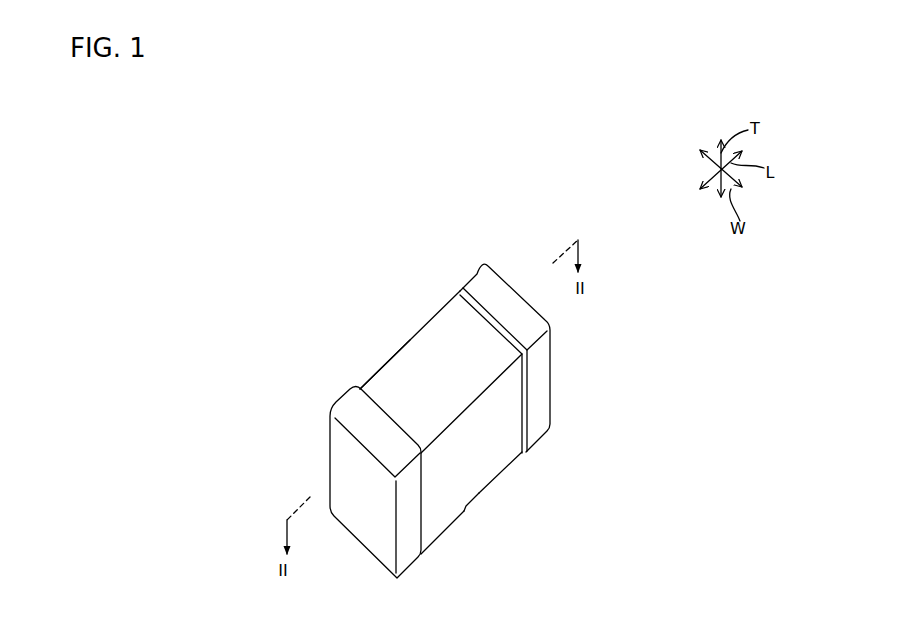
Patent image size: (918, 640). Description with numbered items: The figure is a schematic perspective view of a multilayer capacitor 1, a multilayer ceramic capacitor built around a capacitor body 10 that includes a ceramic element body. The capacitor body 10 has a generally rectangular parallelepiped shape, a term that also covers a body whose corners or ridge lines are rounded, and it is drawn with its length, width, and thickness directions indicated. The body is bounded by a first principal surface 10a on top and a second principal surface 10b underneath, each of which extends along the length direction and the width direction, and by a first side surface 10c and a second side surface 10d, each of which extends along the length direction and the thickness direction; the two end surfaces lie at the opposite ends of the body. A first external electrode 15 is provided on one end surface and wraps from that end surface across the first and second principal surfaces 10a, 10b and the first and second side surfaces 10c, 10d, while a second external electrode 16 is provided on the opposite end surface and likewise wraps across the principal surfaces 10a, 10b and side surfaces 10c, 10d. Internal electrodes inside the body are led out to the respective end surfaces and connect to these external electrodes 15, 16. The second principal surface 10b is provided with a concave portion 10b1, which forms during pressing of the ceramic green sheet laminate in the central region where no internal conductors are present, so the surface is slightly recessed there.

The multilayer capacitor 1 is at (450, 424).
The capacitor body 10 is at (424, 431).
The first principal surface 10a is at (457, 330).
The second principal surface 10b is at (430, 545).
The concave portion 10b1 is at (478, 495).
The first side surface 10c is at (377, 373).
The second side surface 10d is at (437, 505).
The first external electrode 15 is at (366, 560).
The second external electrode 16 is at (560, 373).